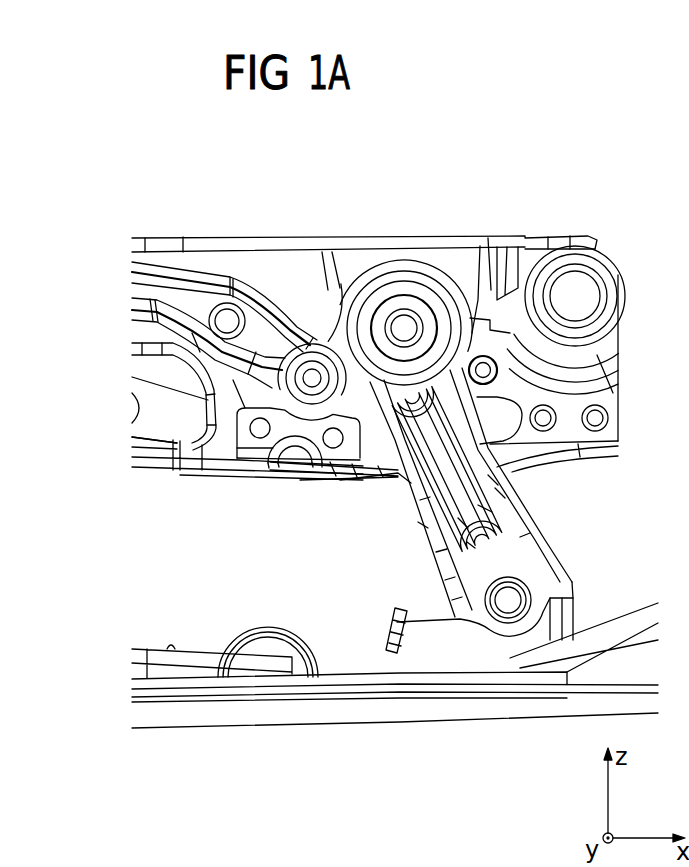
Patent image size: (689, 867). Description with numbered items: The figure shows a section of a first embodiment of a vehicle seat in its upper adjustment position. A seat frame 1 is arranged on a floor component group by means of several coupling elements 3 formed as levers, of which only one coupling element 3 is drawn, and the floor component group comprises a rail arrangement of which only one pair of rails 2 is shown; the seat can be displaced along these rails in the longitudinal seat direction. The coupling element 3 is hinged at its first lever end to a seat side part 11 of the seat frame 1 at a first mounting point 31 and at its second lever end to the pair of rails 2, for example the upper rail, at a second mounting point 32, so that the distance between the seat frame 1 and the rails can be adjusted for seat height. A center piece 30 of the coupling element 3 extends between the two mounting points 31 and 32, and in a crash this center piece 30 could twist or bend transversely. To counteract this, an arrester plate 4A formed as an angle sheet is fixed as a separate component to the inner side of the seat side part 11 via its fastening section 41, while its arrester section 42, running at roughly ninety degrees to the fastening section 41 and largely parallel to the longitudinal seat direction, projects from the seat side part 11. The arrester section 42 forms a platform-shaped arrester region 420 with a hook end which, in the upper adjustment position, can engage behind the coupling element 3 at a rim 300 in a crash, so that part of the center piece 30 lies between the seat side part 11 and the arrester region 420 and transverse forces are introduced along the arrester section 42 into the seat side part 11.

The seat frame 1 is at (306, 230).
The seat side part 11 is at (620, 312).
The pair of rails 2 is at (532, 728).
The coupling element 3 is at (542, 510).
The center piece 30 is at (618, 441).
The rim 300 is at (349, 374).
The first mounting point 31 is at (404, 309).
The second mounting point 32 is at (532, 591).
The arrester plate 4A is at (240, 473).
The fastening section 41 is at (238, 410).
The arrester section 42 is at (276, 463).
The arrester region 420 is at (350, 476).